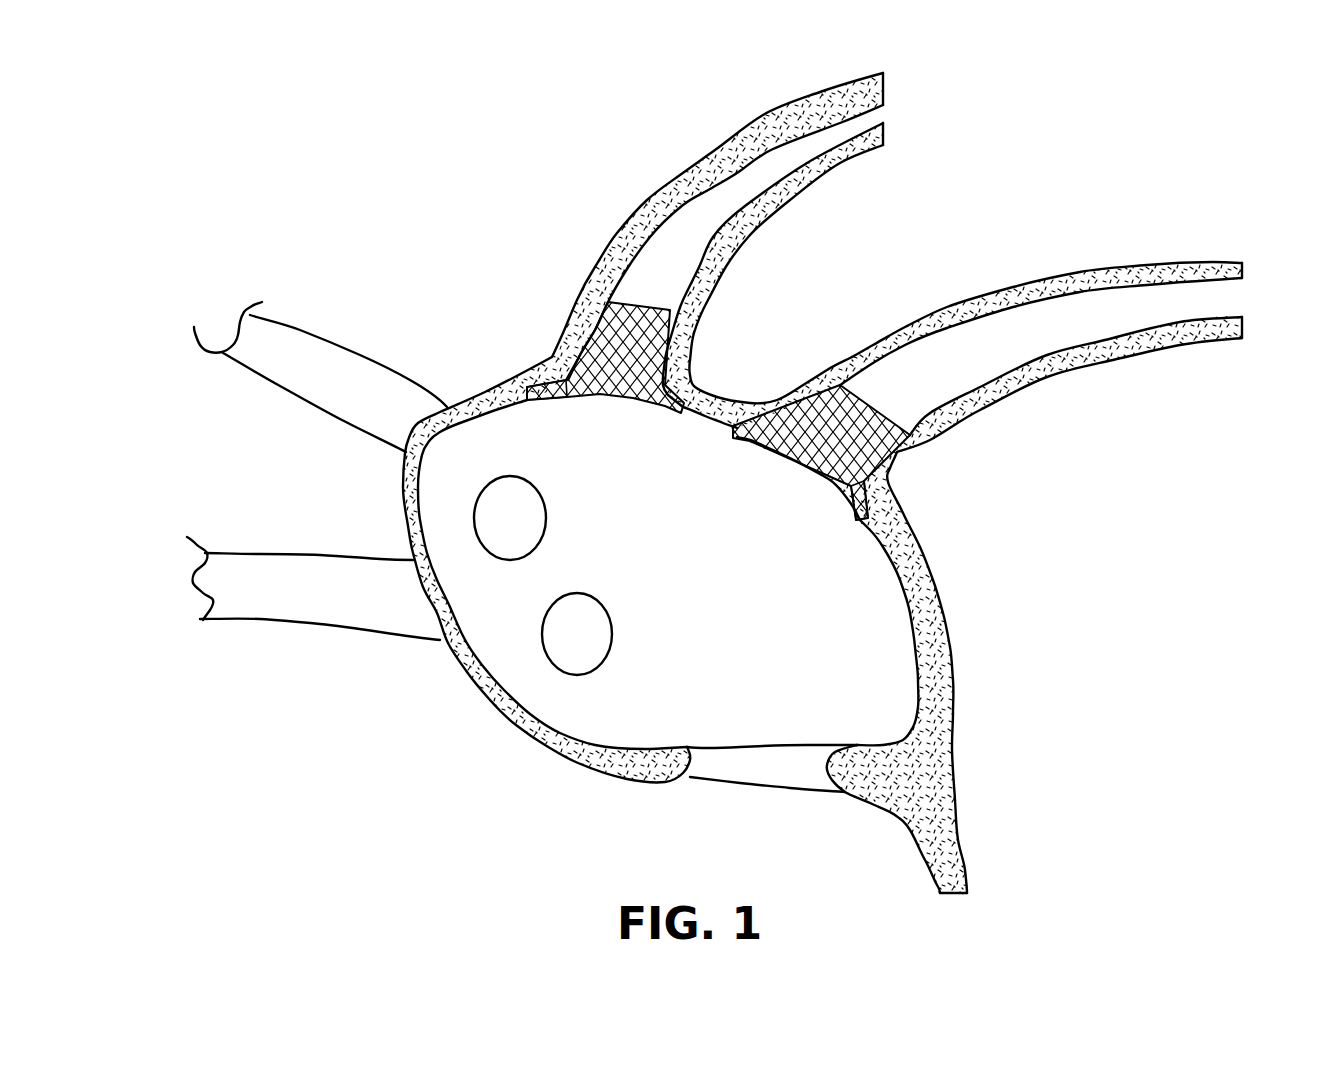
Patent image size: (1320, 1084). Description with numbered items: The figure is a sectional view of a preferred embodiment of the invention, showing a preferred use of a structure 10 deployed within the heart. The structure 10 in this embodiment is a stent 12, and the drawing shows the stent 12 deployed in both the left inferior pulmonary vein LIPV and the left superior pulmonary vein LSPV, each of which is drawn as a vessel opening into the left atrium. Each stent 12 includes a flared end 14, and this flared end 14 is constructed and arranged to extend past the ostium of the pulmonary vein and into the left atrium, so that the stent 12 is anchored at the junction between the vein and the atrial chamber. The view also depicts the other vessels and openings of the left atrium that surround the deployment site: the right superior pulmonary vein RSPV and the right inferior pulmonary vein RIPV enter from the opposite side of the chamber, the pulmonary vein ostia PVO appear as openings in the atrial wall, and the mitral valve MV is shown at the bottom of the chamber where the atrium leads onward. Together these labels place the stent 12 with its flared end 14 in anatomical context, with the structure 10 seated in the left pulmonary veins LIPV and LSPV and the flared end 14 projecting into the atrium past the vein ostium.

The structure 10 is at (463, 747).
The stent 12 is at (620, 352).
The flared end 14 is at (567, 400).
The left inferior pulmonary vein LIPV is at (665, 252).
The left superior pulmonary vein LSPV is at (987, 353).
The right superior pulmonary vein RSPV is at (347, 367).
The right inferior pulmonary vein RIPV is at (382, 605).
The pulmonary vein ostia PVO is at (612, 641).
The mitral valve MV is at (738, 772).